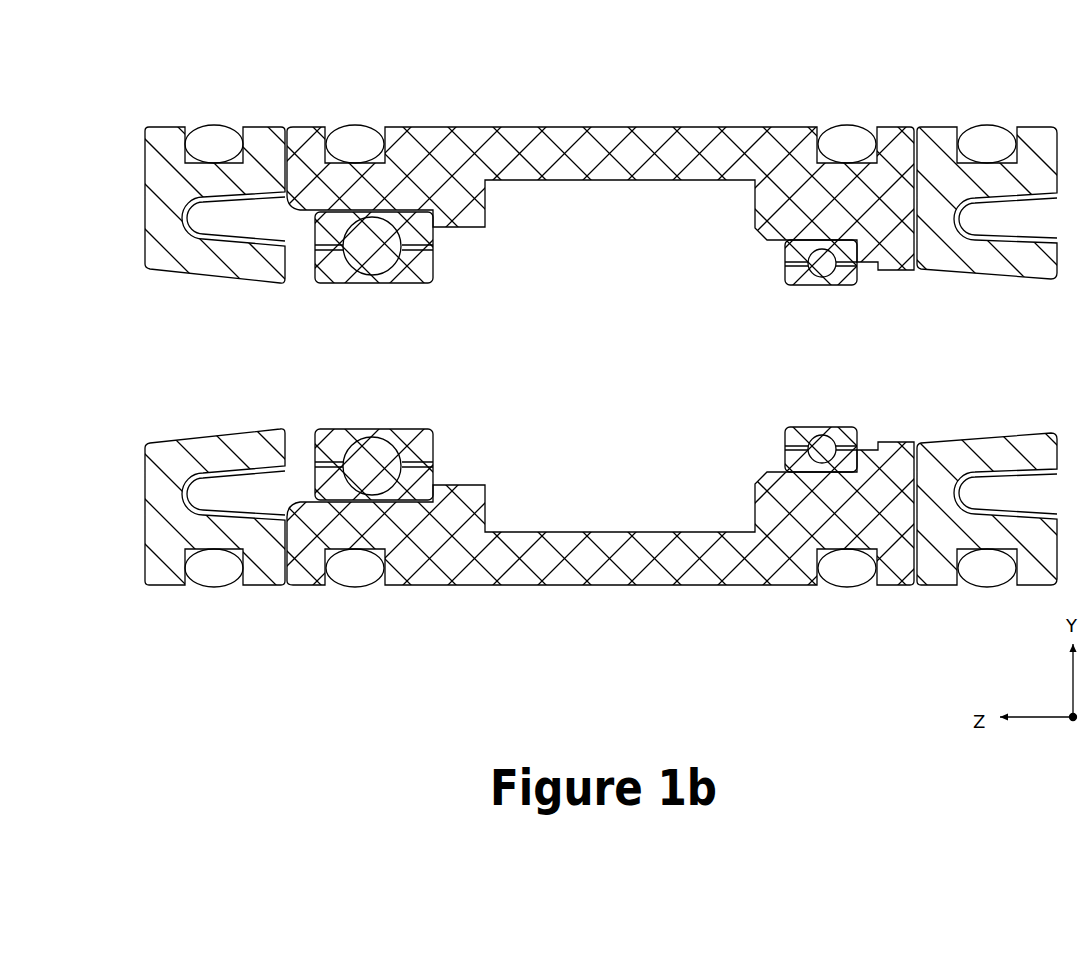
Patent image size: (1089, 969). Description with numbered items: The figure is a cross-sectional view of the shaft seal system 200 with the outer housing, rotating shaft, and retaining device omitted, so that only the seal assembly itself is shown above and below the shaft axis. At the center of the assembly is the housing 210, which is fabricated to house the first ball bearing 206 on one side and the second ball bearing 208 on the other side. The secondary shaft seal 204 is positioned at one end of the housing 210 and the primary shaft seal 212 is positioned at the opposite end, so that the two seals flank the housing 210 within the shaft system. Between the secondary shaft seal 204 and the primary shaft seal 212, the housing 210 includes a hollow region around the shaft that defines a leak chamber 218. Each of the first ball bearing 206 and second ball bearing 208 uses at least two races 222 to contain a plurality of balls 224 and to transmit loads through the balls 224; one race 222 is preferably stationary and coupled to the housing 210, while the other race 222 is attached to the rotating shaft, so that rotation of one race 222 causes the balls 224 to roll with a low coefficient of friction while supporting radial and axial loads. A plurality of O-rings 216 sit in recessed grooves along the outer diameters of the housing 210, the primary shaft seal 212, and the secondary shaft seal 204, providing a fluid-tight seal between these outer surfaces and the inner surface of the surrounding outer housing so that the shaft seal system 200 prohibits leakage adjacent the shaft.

The shaft seal system 200 is at (129, 45).
The secondary shaft seal 204 is at (172, 273).
The first ball bearing 206 is at (320, 296).
The second ball bearing 208 is at (785, 294).
The housing 210 is at (607, 125).
The primary shaft seal 212 is at (975, 275).
The O-rings 216 is at (214, 124).
The leak chamber 218 is at (620, 202).
The races 222 is at (437, 234).
The balls 224 is at (366, 247).